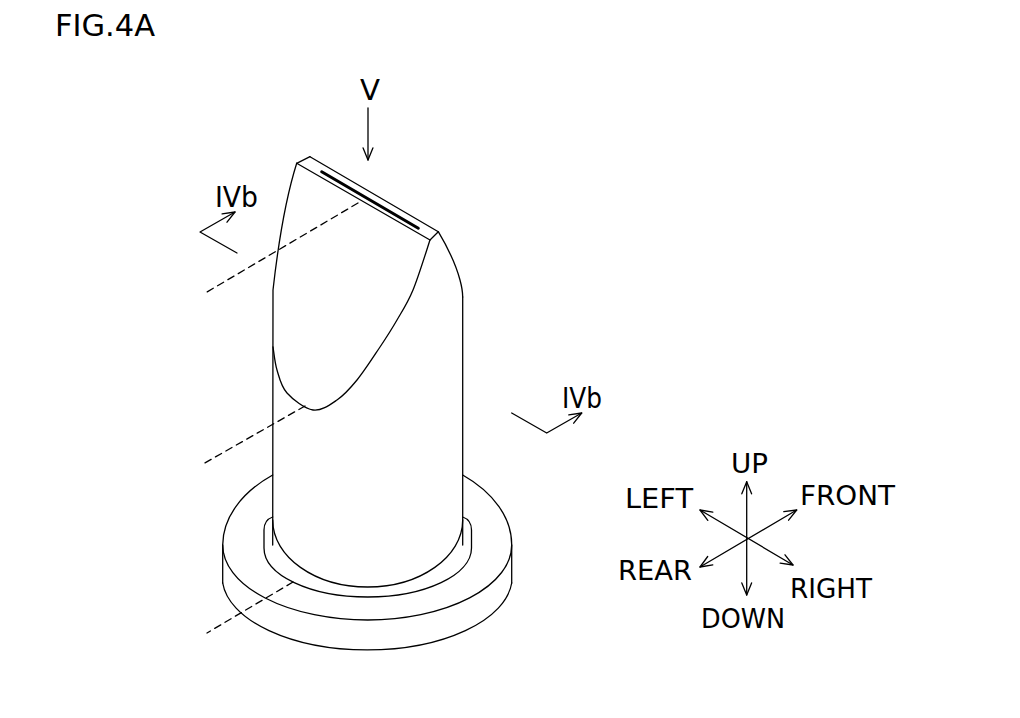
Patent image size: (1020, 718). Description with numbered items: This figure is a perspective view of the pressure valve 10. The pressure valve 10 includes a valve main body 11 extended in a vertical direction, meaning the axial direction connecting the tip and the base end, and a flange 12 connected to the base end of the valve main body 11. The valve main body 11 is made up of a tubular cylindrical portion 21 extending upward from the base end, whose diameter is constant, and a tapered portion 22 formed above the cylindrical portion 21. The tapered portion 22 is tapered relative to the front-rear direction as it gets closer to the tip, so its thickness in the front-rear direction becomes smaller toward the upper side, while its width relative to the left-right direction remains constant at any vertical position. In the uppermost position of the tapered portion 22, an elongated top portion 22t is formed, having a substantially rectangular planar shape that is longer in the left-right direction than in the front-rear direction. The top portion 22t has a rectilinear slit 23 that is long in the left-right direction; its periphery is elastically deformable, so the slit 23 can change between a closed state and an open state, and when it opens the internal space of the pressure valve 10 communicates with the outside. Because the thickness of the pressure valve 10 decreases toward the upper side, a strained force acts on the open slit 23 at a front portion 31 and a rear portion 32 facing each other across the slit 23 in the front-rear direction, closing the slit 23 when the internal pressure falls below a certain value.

The pressure valve 10 is at (492, 122).
The valve main body 11 is at (465, 345).
The flange 12 is at (513, 573).
The cylindrical portion 21 is at (207, 462).
The tapered portion 22 is at (207, 292).
The top portion 22t is at (313, 158).
The slit 23 is at (380, 198).
The front portion 31 is at (455, 267).
The rear portion 32 is at (368, 310).